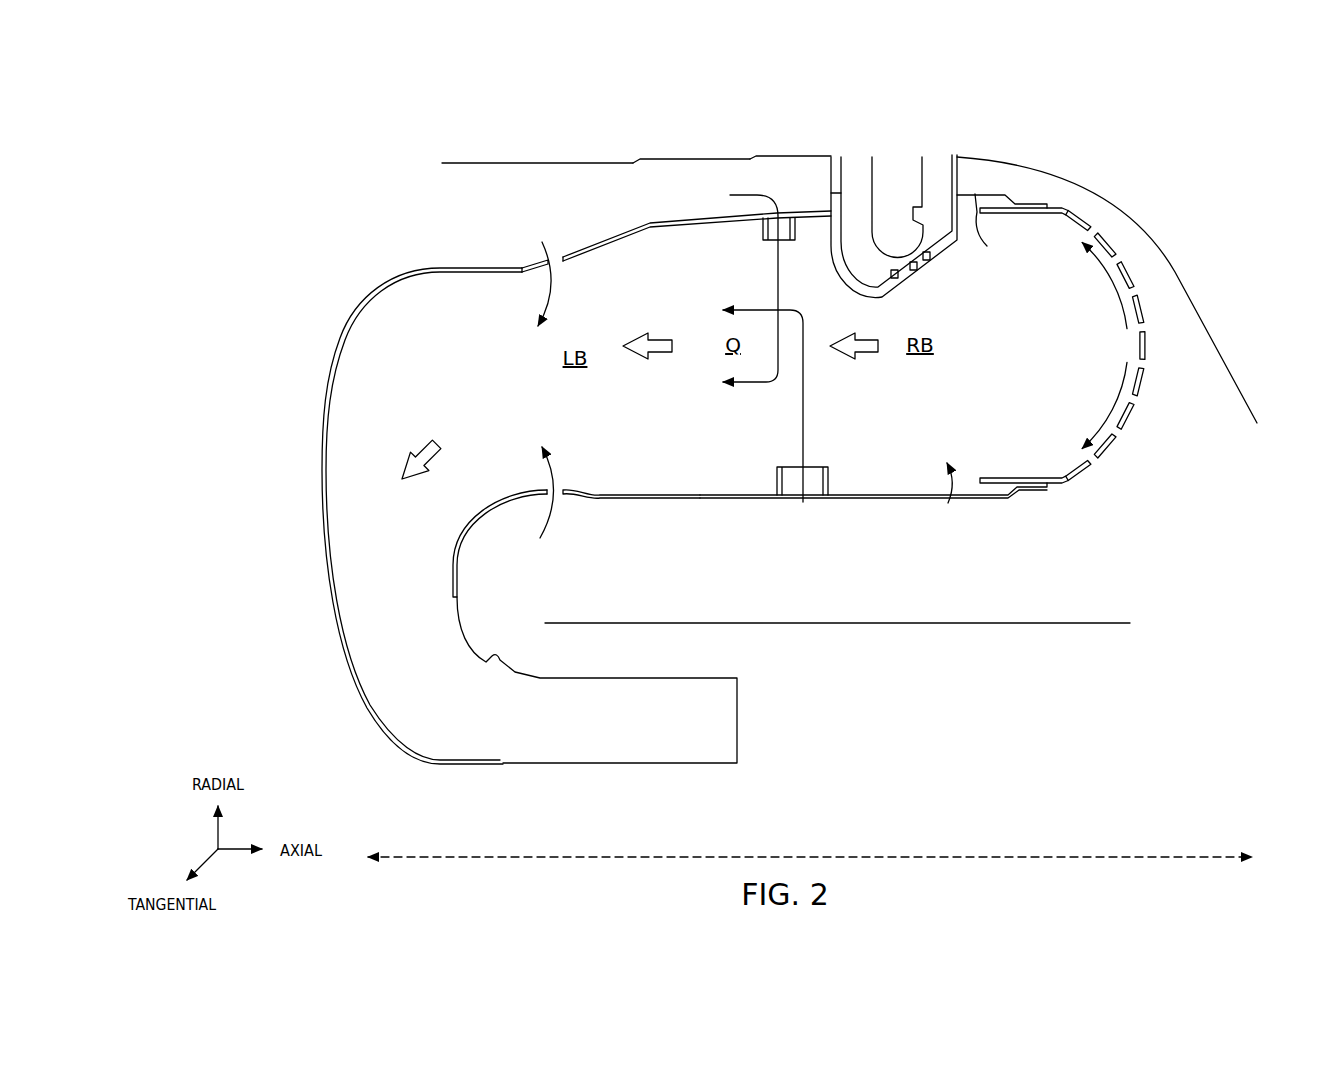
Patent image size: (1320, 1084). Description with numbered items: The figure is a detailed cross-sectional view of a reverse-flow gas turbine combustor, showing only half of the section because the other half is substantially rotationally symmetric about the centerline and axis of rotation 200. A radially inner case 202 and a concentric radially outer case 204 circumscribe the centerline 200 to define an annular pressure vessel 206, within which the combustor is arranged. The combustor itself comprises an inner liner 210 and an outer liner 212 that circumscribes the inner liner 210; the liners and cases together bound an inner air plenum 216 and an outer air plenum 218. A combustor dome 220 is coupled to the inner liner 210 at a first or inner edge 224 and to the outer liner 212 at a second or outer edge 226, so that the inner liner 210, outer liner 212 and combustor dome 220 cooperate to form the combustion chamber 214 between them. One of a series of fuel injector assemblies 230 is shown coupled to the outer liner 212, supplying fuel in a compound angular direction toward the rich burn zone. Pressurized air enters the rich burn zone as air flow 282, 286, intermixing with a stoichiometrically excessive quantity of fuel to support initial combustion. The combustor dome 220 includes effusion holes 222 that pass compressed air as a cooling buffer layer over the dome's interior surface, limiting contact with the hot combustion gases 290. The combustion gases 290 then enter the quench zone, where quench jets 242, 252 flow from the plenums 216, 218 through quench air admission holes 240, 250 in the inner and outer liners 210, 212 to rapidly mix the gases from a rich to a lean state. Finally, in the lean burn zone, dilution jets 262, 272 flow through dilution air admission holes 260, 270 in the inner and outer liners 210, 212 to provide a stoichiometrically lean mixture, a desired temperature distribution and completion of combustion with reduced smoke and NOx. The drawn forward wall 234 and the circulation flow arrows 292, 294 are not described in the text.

The centerline and axis of rotation 200 is at (1003, 855).
The radially inner case 202 is at (1003, 625).
The radially outer case 204 is at (571, 160).
The annular pressure vessel 206 is at (497, 177).
The inner liner 210 is at (718, 503).
The outer liner 212 is at (566, 248).
The combustion chamber 214 is at (460, 375).
The inner air plenum 216 is at (643, 501).
The outer air plenum 218 is at (685, 175).
The combustor dome 220 is at (1130, 272).
The effusion holes 222 is at (1150, 335).
The first (or inner) edge 224 is at (1040, 488).
The second (or outer) edge 226 is at (1043, 204).
The fuel injector assembly 230 is at (898, 165).
The forward wall 234 is at (320, 512).
The quench air admission hole 240 is at (777, 481).
The quench jet 242 is at (800, 410).
The quench air admission hole 250 is at (764, 236).
The quench jet 252 is at (776, 270).
The dilution air admission hole 260 is at (562, 487).
The dilution jet 262 is at (560, 518).
The dilution air admission hole 270 is at (556, 288).
The dilution jet 272 is at (542, 250).
The air flow (primary air jet) 282 is at (935, 464).
The air flow (primary air jet) 286 is at (993, 230).
The combustion gases 290 is at (660, 339).
The lower circulation flow 292 is at (1107, 414).
The upper circulation flow 294 is at (1108, 280).